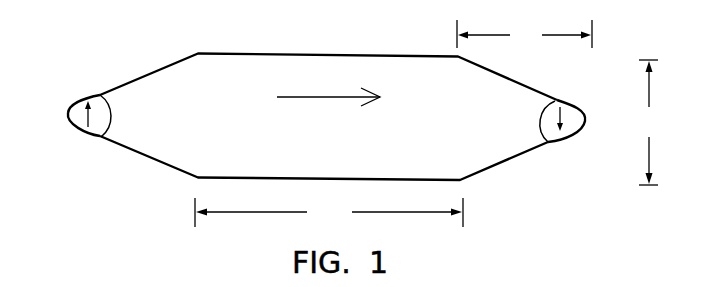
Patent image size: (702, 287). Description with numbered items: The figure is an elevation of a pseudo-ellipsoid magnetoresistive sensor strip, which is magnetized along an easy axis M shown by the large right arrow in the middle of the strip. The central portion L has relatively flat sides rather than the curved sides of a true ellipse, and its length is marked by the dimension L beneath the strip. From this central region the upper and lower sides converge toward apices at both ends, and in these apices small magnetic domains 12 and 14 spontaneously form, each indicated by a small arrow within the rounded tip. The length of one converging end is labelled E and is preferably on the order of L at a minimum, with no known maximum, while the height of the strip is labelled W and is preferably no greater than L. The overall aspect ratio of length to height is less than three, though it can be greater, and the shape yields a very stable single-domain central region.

The small magnetic domain 12 is at (99, 103).
The small magnetic domain 14 is at (555, 100).
The easy axis M is at (341, 119).
The length of an end E is at (524, 34).
The central portion L is at (329, 212).
The height W is at (651, 122).